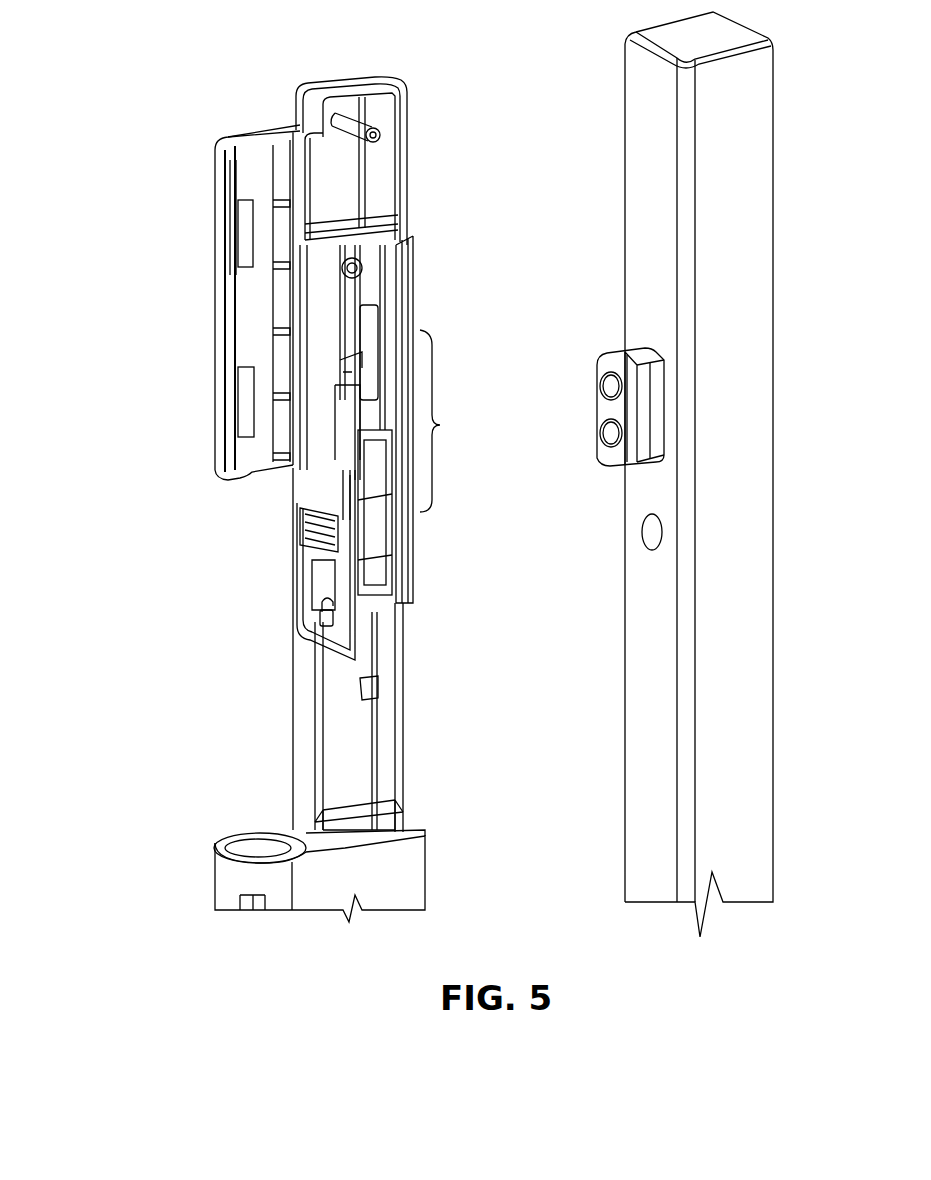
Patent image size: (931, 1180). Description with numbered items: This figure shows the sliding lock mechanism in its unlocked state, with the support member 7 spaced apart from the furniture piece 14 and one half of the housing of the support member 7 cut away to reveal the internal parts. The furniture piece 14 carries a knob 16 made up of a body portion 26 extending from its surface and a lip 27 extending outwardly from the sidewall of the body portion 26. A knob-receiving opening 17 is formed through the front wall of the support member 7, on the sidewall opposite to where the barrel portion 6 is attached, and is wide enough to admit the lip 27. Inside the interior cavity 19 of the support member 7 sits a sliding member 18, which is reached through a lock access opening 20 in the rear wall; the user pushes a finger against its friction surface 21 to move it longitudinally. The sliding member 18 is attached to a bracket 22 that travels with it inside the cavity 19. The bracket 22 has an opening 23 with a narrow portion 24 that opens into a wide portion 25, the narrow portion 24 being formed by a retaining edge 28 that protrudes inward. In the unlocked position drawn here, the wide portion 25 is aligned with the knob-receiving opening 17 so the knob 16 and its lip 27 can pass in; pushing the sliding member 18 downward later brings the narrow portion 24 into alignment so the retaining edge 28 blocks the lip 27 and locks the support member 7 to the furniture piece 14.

The barrel portion 6 is at (232, 140).
The support member 7 is at (338, 95).
The furniture piece 14 is at (752, 108).
The knob 16 is at (594, 412).
The knob-receiving opening 17 is at (385, 478).
The sliding member 18 is at (318, 578).
The interior cavity 19 is at (345, 700).
The lock access opening 20 is at (300, 628).
The friction surface 21 is at (300, 530).
The bracket 22 is at (400, 240).
The opening 23 is at (444, 421).
The narrow portion 24 is at (370, 343).
The wide portion 25 is at (380, 443).
The body portion 26 is at (650, 438).
The lip 27 is at (628, 393).
The retaining edge 28 is at (370, 375).